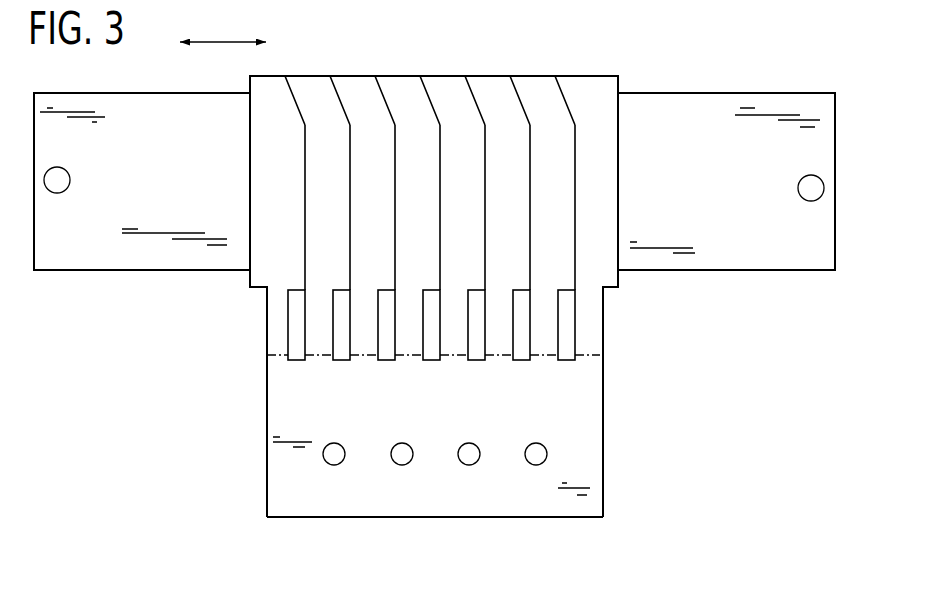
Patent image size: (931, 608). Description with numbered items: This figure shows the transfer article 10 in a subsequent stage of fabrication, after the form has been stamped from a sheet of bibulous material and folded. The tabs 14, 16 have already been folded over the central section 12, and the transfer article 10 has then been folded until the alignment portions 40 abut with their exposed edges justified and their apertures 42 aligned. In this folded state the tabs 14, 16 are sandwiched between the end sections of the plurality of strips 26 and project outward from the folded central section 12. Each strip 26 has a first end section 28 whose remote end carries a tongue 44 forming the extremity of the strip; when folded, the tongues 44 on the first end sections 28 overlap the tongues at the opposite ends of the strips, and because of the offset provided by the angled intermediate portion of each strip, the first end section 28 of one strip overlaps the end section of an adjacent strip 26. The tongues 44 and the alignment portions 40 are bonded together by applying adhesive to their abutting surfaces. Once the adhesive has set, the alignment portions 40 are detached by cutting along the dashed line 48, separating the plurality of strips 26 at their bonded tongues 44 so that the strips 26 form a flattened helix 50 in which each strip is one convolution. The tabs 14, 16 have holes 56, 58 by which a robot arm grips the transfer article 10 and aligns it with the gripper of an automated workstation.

The transfer article 10 is at (233, 369).
The central section 12 is at (590, 397).
The tab 14 is at (152, 140).
The tab 16 is at (705, 140).
The plurality of strips 26 is at (446, 93).
The first end section 28 is at (340, 211).
The alignment portion 40 is at (423, 497).
The apertures 42 is at (337, 465).
The tongue 44 is at (453, 342).
The dashed line 48 is at (598, 354).
The flattened helix 50 is at (222, 43).
The hole 56 is at (60, 193).
The hole 58 is at (798, 186).